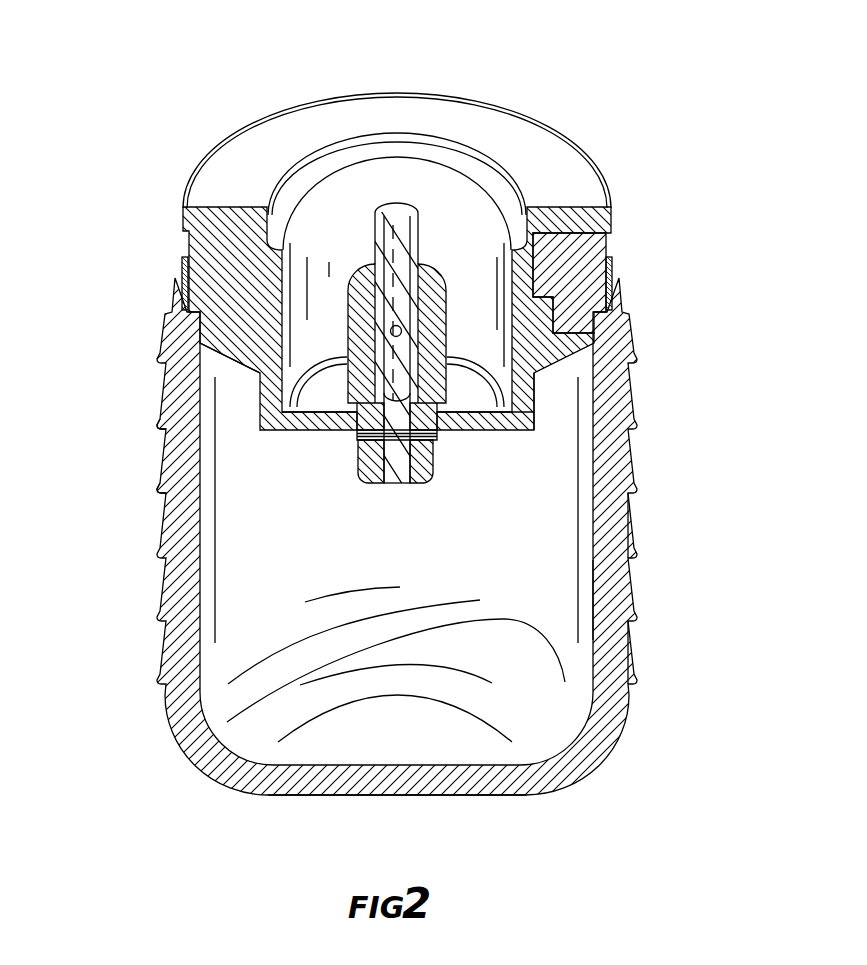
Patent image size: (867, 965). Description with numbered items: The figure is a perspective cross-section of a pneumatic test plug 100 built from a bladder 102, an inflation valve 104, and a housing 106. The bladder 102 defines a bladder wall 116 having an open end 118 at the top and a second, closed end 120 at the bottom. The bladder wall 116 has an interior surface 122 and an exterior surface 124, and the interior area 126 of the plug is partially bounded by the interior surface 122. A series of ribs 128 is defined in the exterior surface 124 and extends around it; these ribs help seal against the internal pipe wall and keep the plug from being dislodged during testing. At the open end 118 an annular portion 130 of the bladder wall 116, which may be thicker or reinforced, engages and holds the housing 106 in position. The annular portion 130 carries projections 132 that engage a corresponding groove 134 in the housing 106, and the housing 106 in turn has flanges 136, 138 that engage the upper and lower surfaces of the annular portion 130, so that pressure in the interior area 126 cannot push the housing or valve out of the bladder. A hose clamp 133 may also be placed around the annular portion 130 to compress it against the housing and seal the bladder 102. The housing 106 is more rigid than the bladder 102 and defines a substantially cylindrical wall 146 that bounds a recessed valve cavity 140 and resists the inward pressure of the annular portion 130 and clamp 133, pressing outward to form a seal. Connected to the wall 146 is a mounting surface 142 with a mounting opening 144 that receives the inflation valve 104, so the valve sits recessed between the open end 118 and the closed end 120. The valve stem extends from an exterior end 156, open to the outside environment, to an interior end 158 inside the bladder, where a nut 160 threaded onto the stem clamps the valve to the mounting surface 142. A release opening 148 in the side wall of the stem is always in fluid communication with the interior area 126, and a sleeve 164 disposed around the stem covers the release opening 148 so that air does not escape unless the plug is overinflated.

The pneumatic test plug 100 is at (190, 86).
The bladder 102 is at (638, 441).
The inflation valve 104 is at (398, 315).
The housing 106 is at (405, 255).
The bladder wall 116 is at (613, 527).
The open end 118 is at (336, 208).
The second, closed end 120 is at (471, 800).
The interior surface 122 is at (596, 596).
The exterior surface 124 is at (628, 650).
The interior area 126 is at (545, 592).
The ribs 128 is at (160, 484).
The annular portion 130 is at (594, 273).
The projections 132 is at (537, 267).
The hose clamp 133 is at (181, 268).
The groove 134 is at (524, 267).
The flange 136 is at (183, 219).
The flange 138 is at (206, 342).
The valve cavity 140 is at (353, 262).
The mounting surface 142 is at (478, 431).
The mounting opening 144 is at (372, 434).
The wall 146 is at (537, 388).
The release opening 148 is at (402, 332).
The exterior end 156 is at (400, 206).
The interior end 158 is at (385, 484).
The nut 160 is at (363, 480).
The sleeve 164 is at (350, 375).